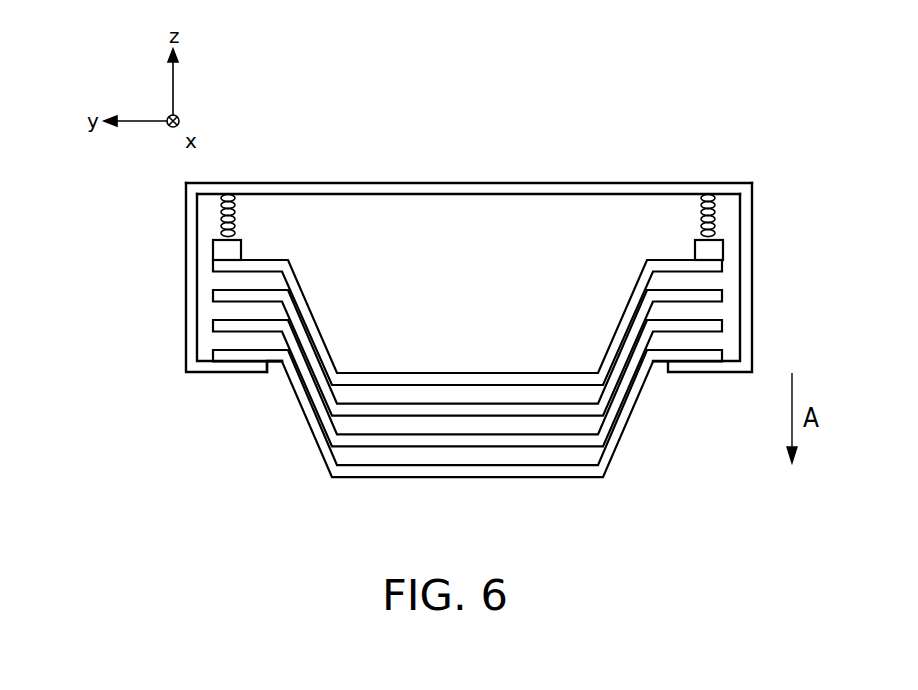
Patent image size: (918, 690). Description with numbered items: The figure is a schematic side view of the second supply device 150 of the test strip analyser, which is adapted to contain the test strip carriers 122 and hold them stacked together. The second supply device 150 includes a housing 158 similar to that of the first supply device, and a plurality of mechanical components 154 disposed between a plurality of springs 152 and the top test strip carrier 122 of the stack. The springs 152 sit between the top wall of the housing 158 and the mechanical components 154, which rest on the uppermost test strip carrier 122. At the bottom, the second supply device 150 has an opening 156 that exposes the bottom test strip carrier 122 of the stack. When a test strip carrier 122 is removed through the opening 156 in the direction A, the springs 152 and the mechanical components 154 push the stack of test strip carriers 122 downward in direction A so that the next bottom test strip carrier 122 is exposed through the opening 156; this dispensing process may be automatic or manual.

The second supply device 150 is at (485, 320).
The springs 152 is at (718, 220).
The mechanical components 154 is at (706, 254).
The opening 156 is at (276, 367).
The housing 158 is at (530, 191).
The test strip carriers 122 is at (555, 478).